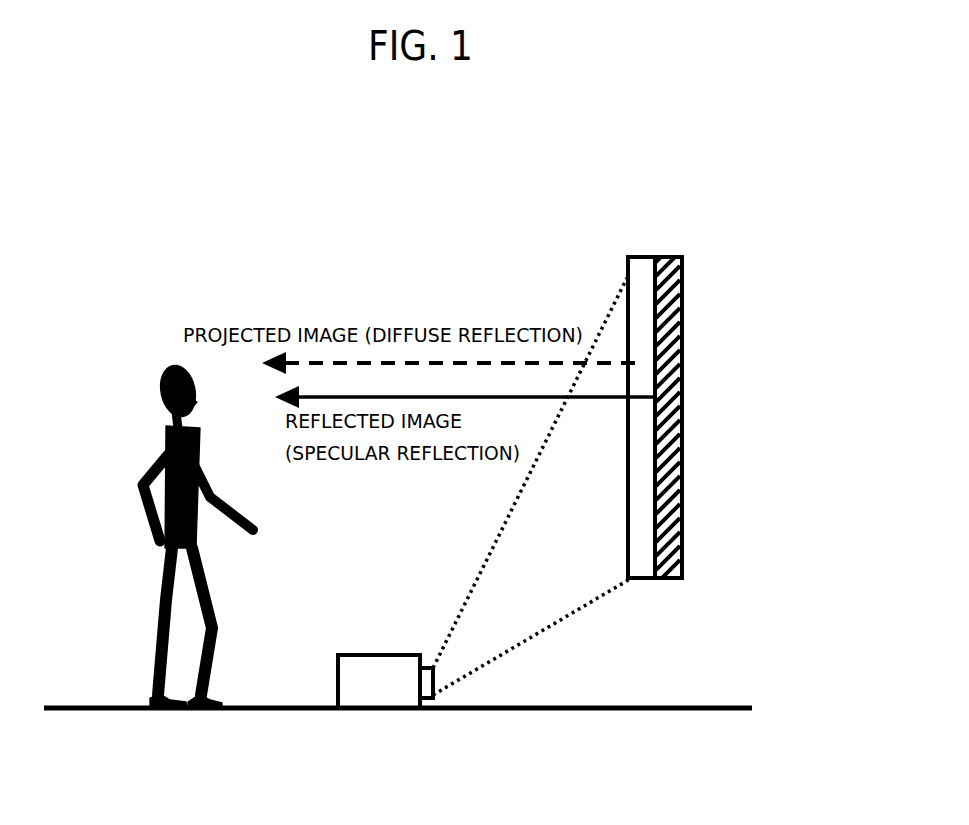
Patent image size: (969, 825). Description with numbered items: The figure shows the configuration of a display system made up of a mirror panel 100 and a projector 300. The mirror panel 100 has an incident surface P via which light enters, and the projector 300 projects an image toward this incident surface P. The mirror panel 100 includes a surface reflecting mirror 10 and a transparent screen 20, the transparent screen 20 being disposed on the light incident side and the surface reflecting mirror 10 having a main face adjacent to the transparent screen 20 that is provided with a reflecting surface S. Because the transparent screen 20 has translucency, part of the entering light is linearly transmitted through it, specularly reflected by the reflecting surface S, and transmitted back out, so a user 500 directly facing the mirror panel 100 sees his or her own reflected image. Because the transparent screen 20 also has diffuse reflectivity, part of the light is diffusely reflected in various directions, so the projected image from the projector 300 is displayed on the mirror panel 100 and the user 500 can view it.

The mirror panel 100 is at (675, 421).
The surface reflecting mirror 10 is at (668, 257).
The transparent screen 20 is at (636, 257).
The projector 300 is at (375, 655).
The user 500 is at (152, 447).
The incident surface P is at (628, 330).
The reflecting surface S is at (652, 463).